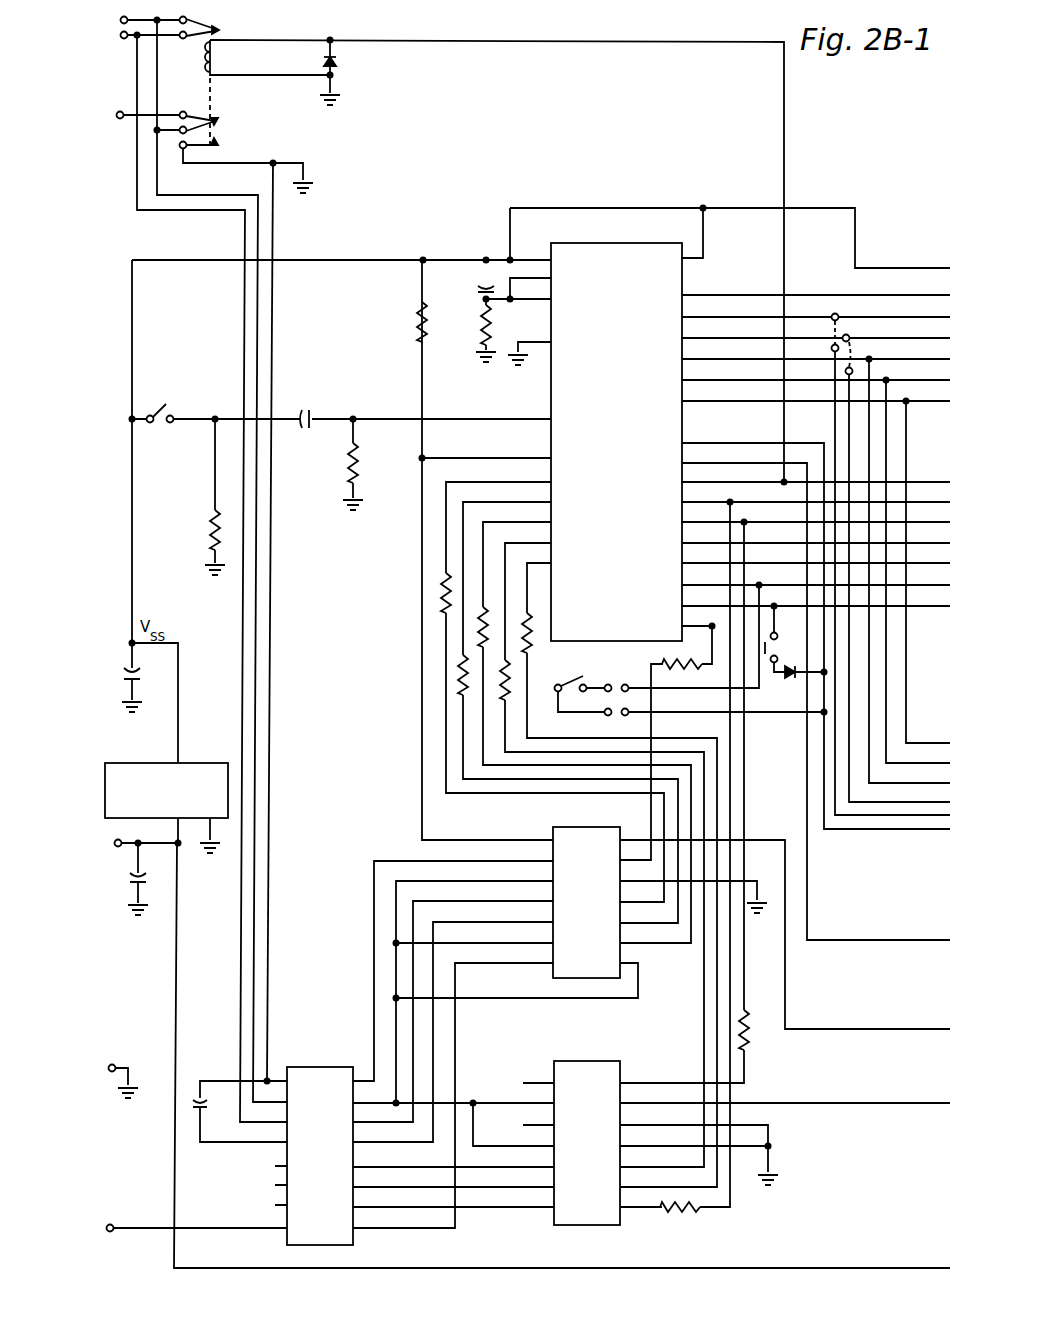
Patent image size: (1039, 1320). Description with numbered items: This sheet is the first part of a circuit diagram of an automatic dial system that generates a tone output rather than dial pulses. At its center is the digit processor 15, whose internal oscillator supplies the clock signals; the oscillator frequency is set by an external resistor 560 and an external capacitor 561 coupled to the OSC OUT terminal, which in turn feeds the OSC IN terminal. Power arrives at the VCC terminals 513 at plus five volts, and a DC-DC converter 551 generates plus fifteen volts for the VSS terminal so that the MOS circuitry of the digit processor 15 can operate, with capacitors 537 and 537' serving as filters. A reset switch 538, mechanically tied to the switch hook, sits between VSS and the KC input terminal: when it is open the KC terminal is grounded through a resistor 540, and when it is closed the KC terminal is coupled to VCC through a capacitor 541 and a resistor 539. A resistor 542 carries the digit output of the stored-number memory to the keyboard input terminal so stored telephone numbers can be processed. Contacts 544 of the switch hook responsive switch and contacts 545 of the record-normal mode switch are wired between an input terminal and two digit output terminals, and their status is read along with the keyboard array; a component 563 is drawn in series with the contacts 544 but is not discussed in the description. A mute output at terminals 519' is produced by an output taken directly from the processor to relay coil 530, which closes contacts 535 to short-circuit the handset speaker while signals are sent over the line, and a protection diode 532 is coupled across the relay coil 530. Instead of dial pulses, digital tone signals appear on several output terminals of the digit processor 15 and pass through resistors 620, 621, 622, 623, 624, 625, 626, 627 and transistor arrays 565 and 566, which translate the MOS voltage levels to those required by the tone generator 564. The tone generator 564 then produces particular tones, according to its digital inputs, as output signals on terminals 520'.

The digit processor 15 is at (665, 243).
The VCC terminals 513 is at (112, 843).
The mute output terminals 519' is at (119, 28).
The output terminals 520' is at (83, 674).
The relay coil 530 is at (200, 52).
The protection diode 532 is at (336, 60).
The relay contacts 535 is at (205, 26).
The capacitor 537 is at (102, 677).
The capacitor 537' is at (137, 897).
The reset switch 538 is at (150, 414).
The resistor 539 is at (213, 540).
The resistor 540 is at (352, 470).
The capacitor 541 is at (305, 408).
The resistor 542 is at (420, 325).
The contacts of switch hook responsive switch 544 is at (780, 646).
The contacts of record-normal mode switch 545 is at (572, 680).
The DC-DC converter 551 is at (215, 746).
The external resistor 560 is at (482, 340).
The external capacitor 561 is at (482, 290).
The diode 563 is at (786, 680).
The tone generator 564 is at (322, 1067).
The transistor array 565 is at (565, 978).
The transistor array 566 is at (570, 1228).
The resistor 620 is at (678, 660).
The resistor 621 is at (525, 650).
The resistor 622 is at (503, 700).
The resistor 623 is at (481, 630).
The resistor 624 is at (461, 680).
The resistor 625 is at (444, 592).
The resistor 626 is at (745, 1032).
The resistor 627 is at (693, 1212).